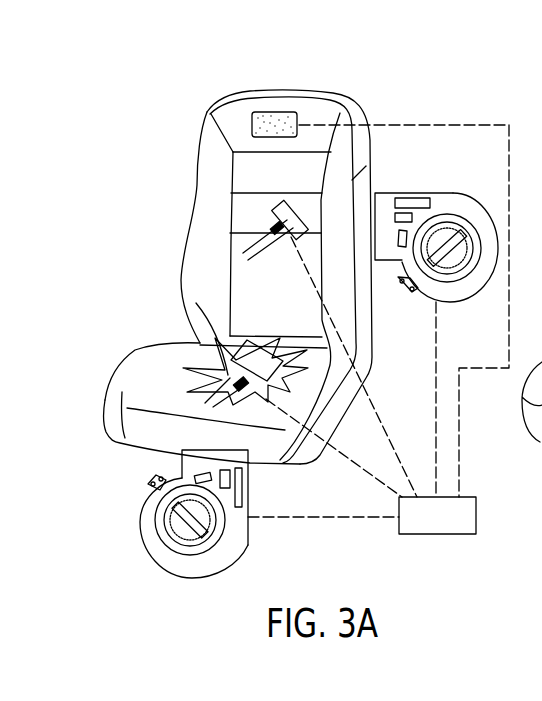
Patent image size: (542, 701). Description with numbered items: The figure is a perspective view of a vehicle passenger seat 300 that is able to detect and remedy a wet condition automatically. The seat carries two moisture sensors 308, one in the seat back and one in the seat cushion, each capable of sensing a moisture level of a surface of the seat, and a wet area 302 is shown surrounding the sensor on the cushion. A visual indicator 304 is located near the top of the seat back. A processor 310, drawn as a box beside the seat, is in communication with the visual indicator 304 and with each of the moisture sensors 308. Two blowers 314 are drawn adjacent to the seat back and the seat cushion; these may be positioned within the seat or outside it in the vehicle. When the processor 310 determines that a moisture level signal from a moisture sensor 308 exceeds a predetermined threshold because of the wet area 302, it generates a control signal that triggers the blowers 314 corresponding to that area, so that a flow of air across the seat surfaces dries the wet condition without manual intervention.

The vehicle passenger seat 300 is at (394, 90).
The wet area 302 is at (200, 314).
The visual indicator 304 is at (269, 110).
The moisture sensors 308 is at (283, 218).
The processor 310 is at (437, 534).
The blowers 314 is at (422, 193).